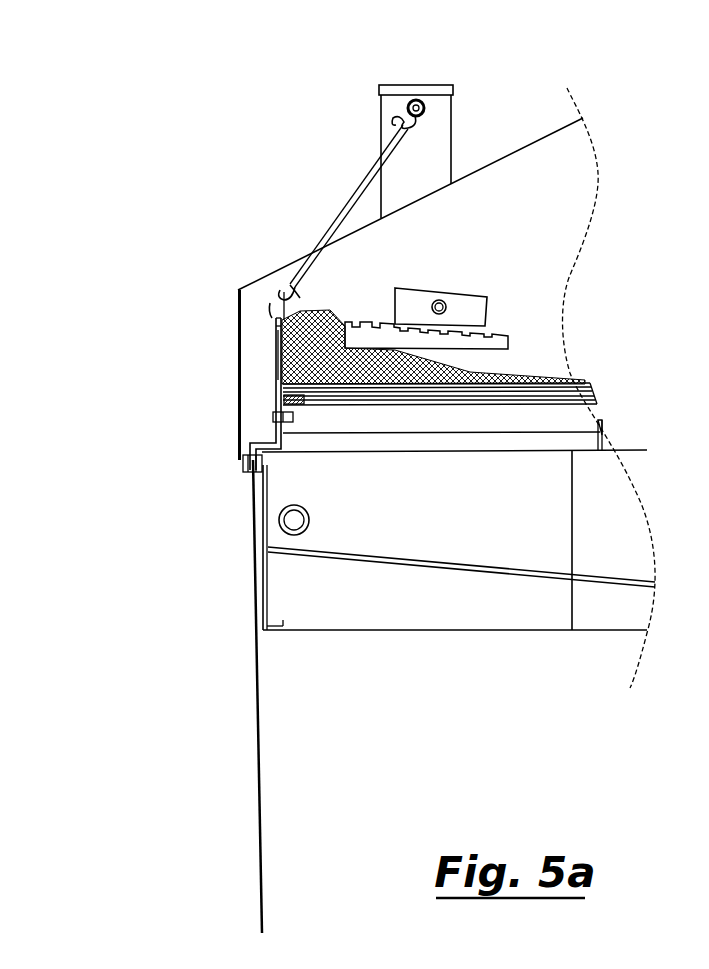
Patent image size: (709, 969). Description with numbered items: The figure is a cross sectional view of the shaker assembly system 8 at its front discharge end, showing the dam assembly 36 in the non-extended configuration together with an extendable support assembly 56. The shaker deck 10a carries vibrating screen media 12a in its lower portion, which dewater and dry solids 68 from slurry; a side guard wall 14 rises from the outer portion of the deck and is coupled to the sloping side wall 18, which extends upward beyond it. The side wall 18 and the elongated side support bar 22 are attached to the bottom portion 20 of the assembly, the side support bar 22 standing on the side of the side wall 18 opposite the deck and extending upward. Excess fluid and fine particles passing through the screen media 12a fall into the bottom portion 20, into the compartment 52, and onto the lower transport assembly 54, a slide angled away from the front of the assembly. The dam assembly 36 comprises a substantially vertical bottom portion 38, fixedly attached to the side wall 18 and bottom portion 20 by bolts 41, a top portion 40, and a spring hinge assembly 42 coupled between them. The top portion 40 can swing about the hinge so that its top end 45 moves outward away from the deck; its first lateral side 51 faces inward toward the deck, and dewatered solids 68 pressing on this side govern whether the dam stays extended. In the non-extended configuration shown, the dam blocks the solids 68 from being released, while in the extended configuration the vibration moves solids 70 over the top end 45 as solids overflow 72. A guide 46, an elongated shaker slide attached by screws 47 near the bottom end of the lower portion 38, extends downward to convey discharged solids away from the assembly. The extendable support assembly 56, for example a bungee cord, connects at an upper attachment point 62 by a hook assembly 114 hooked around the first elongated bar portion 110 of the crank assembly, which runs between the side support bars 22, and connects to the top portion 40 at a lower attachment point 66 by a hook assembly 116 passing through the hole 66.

The shaker assembly system 8 is at (536, 108).
The shaker deck 10a is at (532, 355).
The vibrating screen media 12a is at (570, 383).
The side guard wall 14 is at (470, 305).
The side wall 18 is at (556, 190).
The bottom portion 20 is at (548, 440).
The side support bar 22 is at (388, 101).
The dam assembly 36 is at (262, 364).
The bottom portion of dam assembly 38 is at (268, 446).
The top portion of dam assembly 40 is at (273, 345).
The bolt 41 is at (272, 418).
The hinge assembly 42 is at (278, 386).
The top end of top portion 45 is at (268, 306).
The guide 46 is at (257, 757).
The screw 47 is at (248, 462).
The first lateral side of top portion 51 is at (288, 292).
The compartment 52 is at (490, 510).
The lower transport assembly 54 is at (493, 588).
The extendable support assembly 56 is at (362, 192).
The upper attachment point 62 is at (419, 98).
The lower attachment point 66 is at (272, 328).
The solids 68 is at (318, 312).
The solids 70 is at (543, 373).
The solids overflow 72 is at (270, 326).
The first elongated bar portion 110 is at (428, 112).
The hook assembly 114 is at (404, 127).
The hook assembly 116 is at (283, 296).